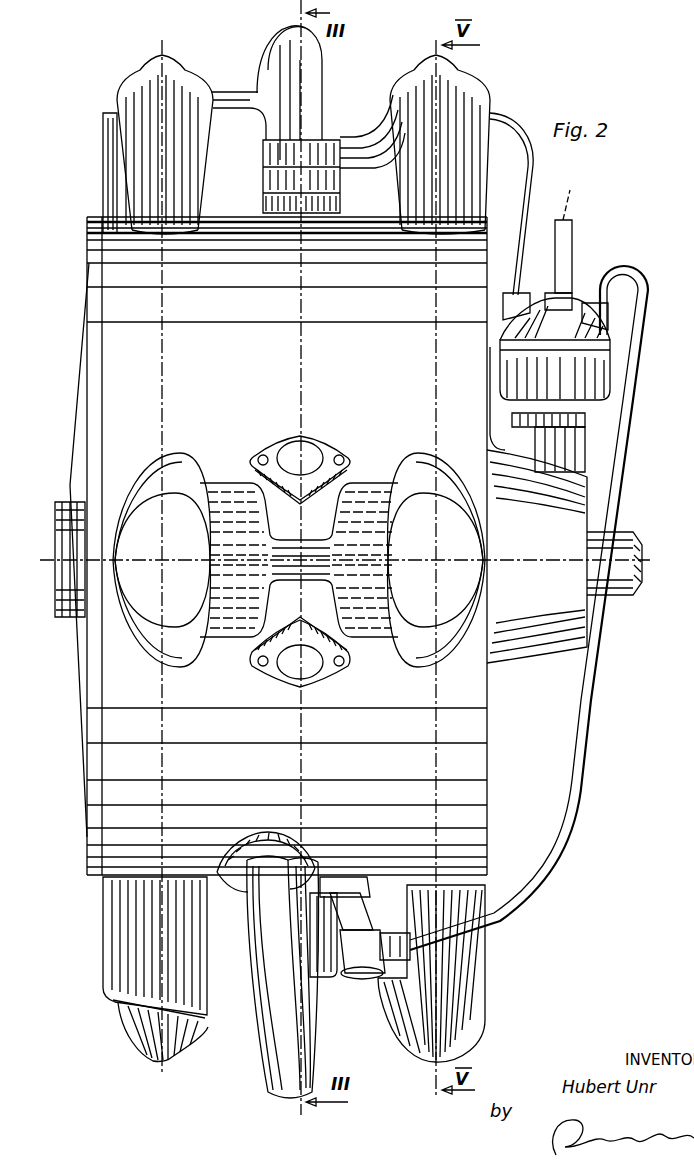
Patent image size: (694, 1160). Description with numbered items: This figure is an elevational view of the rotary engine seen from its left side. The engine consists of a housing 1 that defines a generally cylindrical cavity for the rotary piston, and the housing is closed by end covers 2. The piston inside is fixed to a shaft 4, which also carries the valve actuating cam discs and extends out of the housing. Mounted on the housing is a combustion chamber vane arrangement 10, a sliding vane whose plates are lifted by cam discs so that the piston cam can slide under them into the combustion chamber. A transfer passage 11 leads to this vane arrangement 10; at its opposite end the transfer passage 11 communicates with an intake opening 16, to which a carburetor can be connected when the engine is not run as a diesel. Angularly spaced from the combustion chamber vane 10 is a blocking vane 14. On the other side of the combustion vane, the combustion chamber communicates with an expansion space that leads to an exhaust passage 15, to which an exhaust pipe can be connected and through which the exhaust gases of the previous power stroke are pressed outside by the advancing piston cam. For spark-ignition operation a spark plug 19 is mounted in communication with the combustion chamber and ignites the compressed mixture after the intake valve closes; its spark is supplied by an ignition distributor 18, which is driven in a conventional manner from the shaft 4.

The housing 1 is at (138, 262).
The end covers 2 is at (93, 680).
The shaft 4 is at (615, 570).
The combustion chamber vane arrangement 10 is at (183, 113).
The transfer passage 11 is at (293, 62).
The blocking vane 14 is at (450, 645).
The exhaust passage 15 is at (265, 675).
The intake opening 16 is at (280, 452).
The ignition distributor 18 is at (578, 310).
The spark plug 19 is at (350, 920).